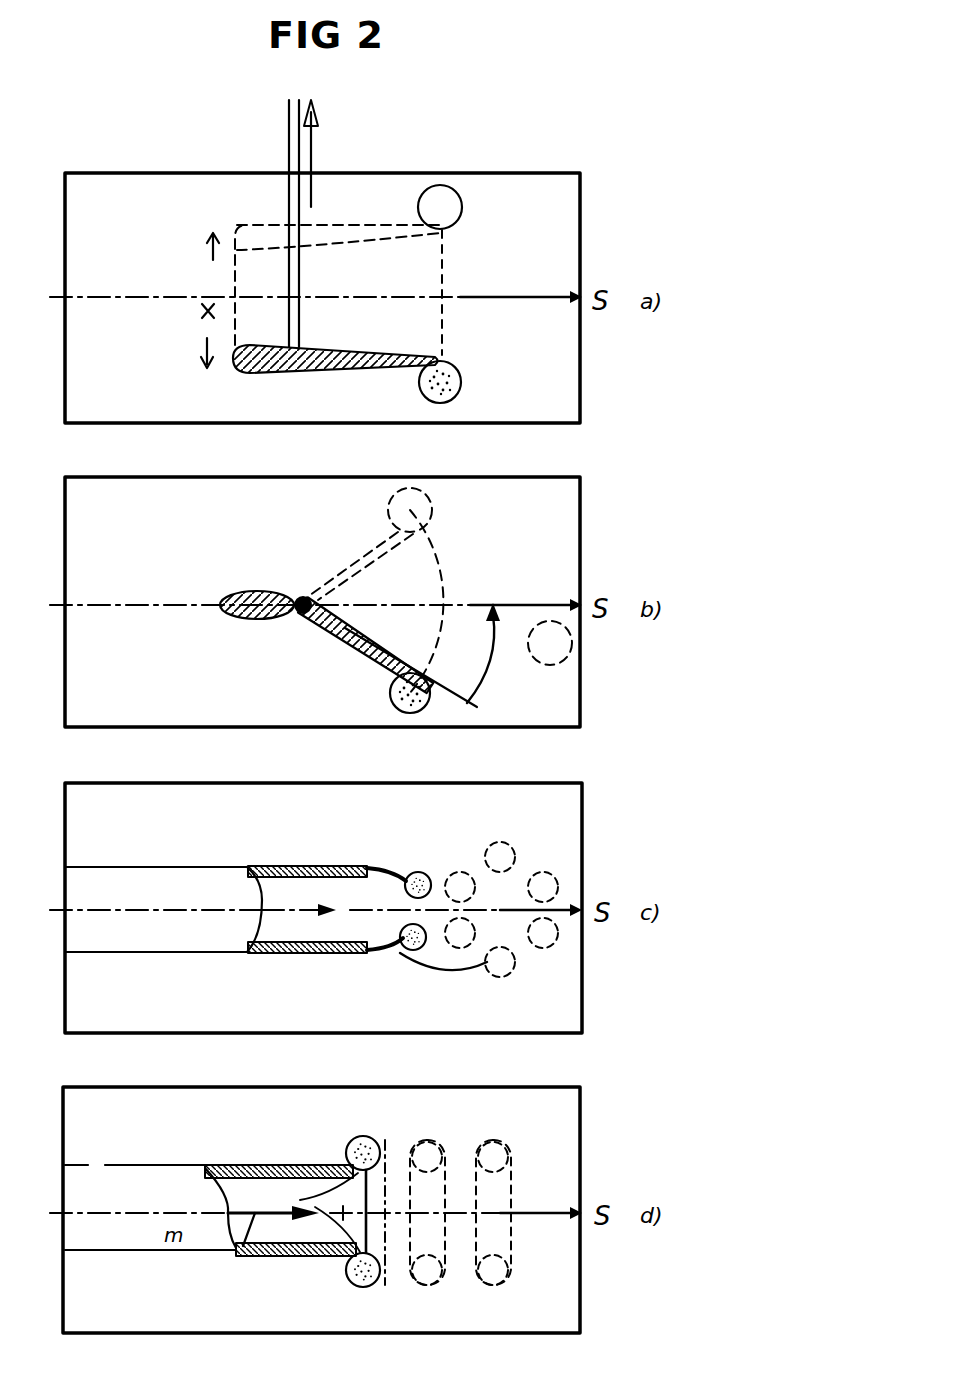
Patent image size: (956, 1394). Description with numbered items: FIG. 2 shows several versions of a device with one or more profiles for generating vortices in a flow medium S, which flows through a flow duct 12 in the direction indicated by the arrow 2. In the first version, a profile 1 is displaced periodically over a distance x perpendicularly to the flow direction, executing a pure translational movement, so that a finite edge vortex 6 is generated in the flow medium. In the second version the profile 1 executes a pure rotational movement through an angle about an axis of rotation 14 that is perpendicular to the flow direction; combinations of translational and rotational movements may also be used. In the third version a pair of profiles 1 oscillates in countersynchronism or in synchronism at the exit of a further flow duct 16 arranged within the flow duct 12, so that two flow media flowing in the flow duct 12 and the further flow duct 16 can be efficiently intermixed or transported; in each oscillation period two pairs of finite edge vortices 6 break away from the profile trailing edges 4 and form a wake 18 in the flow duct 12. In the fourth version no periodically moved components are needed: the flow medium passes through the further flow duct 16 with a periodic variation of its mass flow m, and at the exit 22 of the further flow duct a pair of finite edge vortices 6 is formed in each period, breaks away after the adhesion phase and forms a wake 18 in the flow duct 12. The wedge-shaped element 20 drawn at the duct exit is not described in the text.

The profile 1 is at (313, 373).
The arrow 2 is at (538, 297).
The profile trailing edge 4 is at (451, 791).
The finite edge vortex 6 is at (462, 368).
The flow duct 12 is at (378, 173).
The axis of rotation 14 is at (305, 596).
The further flow duct 16 is at (232, 953).
The wake 18 is at (517, 857).
The wedge / nozzle insert 20 is at (238, 1257).
The exit of the further flow duct 22 is at (319, 1211).